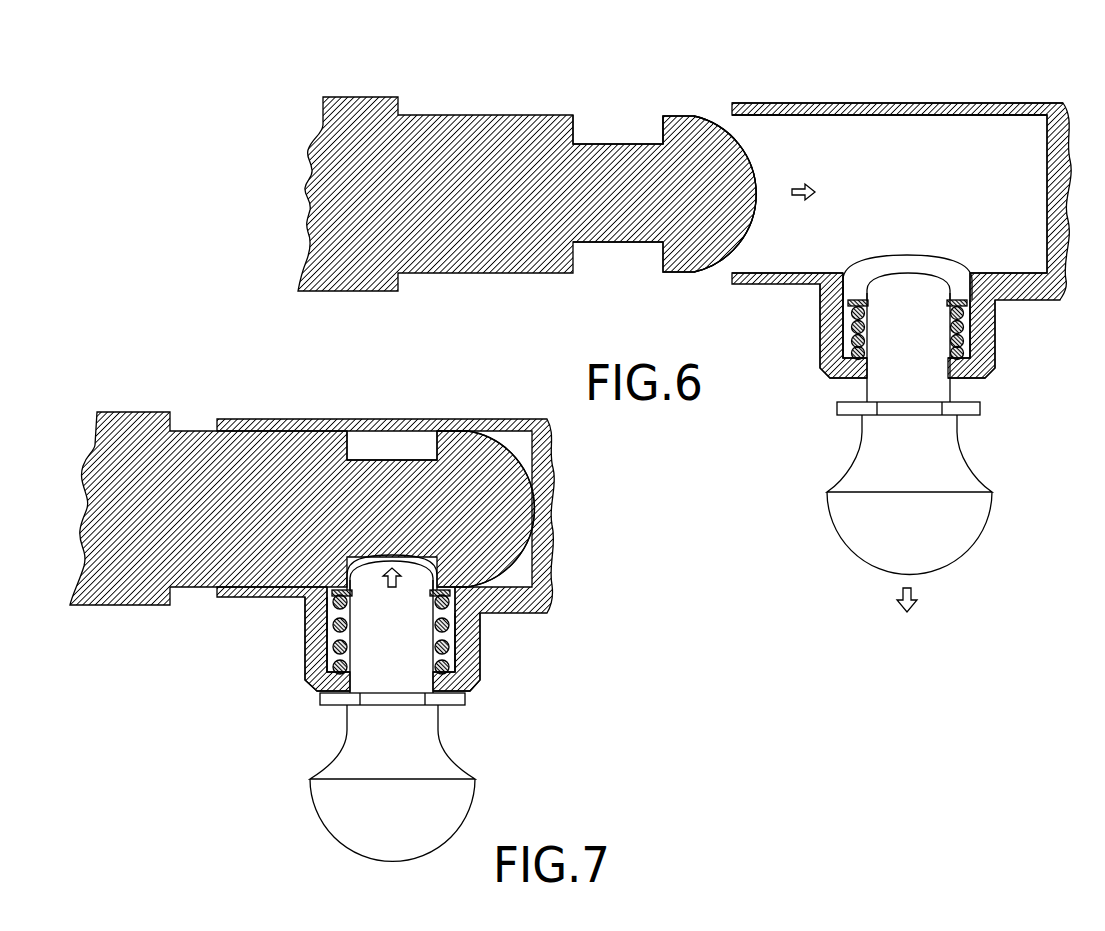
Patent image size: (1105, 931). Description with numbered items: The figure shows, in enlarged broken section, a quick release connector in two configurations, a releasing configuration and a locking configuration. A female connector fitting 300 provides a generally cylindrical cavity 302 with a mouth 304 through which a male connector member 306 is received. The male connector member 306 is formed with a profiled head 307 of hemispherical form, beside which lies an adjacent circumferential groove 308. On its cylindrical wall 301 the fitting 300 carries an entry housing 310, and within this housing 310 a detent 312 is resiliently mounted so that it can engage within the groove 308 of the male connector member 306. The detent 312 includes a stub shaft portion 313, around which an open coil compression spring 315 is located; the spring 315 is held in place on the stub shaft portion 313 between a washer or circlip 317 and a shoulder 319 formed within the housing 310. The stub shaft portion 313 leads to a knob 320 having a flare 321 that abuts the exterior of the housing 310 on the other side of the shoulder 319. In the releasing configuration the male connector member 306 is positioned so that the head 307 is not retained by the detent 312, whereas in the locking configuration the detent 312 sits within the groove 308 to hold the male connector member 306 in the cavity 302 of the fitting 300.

In FIG. 6, the female connector fitting 300 is at (965, 76).
In FIG. 7, the female connector fitting 300 is at (552, 500).
In FIG. 6, the cylindrical wall 301 is at (834, 115).
In FIG. 6, the cylindrical cavity 302 is at (948, 177).
In FIG. 6, the mouth 304 is at (727, 263).
In FIG. 6, the male connector member 306 is at (550, 86).
In FIG. 7, the male connector member 306 is at (103, 605).
In FIG. 6, the profiled head 307 is at (665, 272).
In FIG. 7, the profiled head 307 is at (505, 447).
In FIG. 6, the circumferential groove 308 is at (637, 145).
In FIG. 7, the circumferential groove 308 is at (390, 458).
In FIG. 6, the entry housing 310 is at (997, 348).
In FIG. 7, the entry housing 310 is at (480, 680).
In FIG. 6, the detent 312 is at (885, 373).
In FIG. 7, the detent 312 is at (365, 673).
In FIG. 6, the stub shaft portion 313 is at (923, 326).
In FIG. 7, the stub shaft portion 313 is at (413, 635).
In FIG. 6, the open coil compression spring 315 is at (962, 317).
In FIG. 7, the open coil compression spring 315 is at (450, 643).
In FIG. 6, the washer or circlip 317 is at (822, 296).
In FIG. 7, the washer or circlip 317 is at (520, 615).
In FIG. 6, the shoulder 319 is at (848, 353).
In FIG. 7, the shoulder 319 is at (330, 648).
In FIG. 6, the knob 320 is at (863, 538).
In FIG. 7, the knob 320 is at (345, 805).
In FIG. 6, the flare 321 is at (837, 405).
In FIG. 7, the flare 321 is at (320, 697).